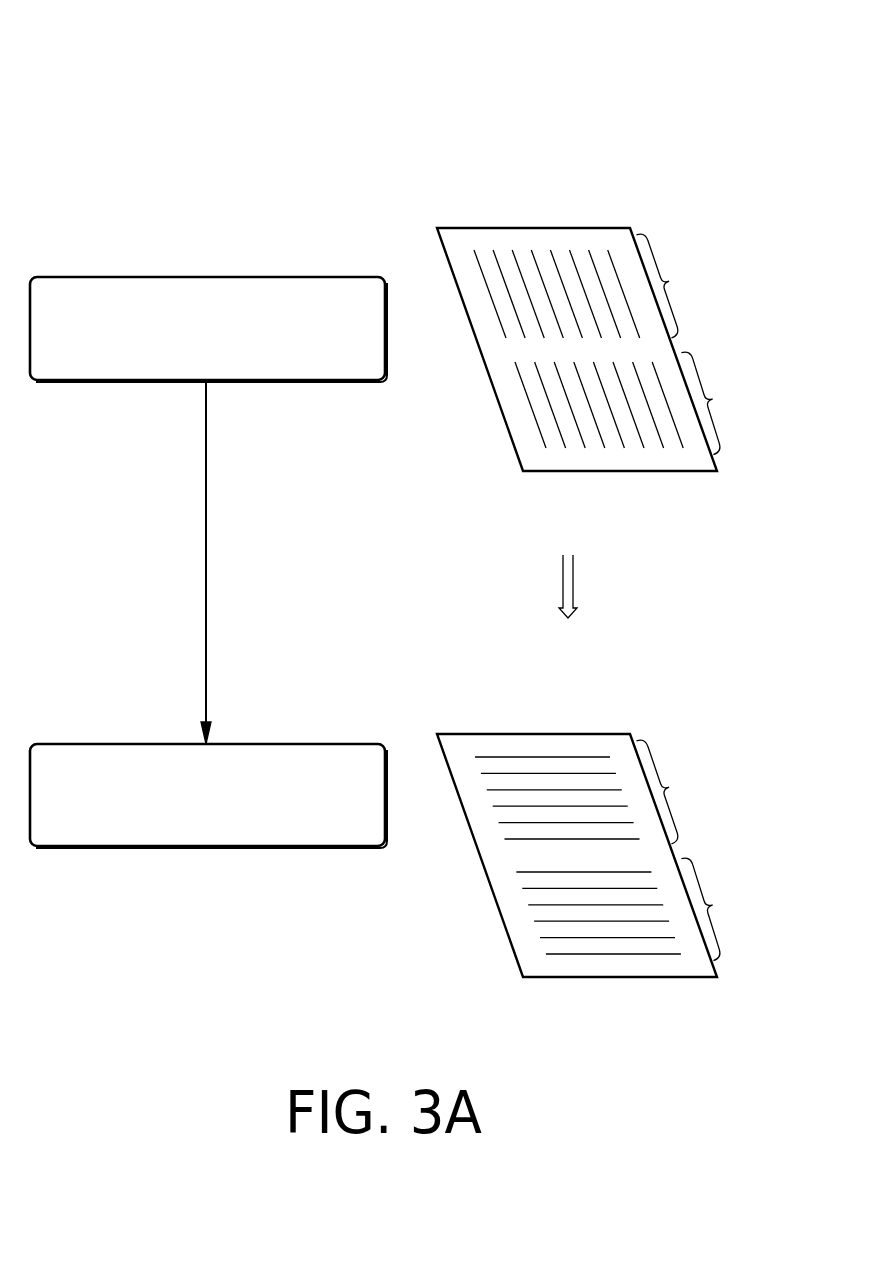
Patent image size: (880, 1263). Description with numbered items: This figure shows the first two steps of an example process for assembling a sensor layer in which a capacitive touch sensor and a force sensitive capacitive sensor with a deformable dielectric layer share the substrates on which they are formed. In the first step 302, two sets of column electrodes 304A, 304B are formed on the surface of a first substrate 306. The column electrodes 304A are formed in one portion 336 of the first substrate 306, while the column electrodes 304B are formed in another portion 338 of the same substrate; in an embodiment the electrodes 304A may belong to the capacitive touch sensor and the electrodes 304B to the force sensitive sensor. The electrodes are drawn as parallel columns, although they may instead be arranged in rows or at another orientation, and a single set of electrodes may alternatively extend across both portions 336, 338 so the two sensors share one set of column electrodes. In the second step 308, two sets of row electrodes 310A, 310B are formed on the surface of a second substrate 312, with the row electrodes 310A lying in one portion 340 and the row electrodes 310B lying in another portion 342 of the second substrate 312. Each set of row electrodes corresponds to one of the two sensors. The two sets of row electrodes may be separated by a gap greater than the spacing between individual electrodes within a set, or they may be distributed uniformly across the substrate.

The forming step for first substrate 302 is at (208, 329).
The forming step for second substrate 308 is at (208, 796).
The first substrate 306 is at (456, 219).
The column electrodes 304A is at (606, 239).
The column electrodes 304B is at (542, 463).
The portion of first substrate 336 is at (676, 286).
The portion of first substrate 338 is at (718, 403).
The second substrate 312 is at (472, 724).
The row electrodes 310A is at (611, 746).
The row electrodes 310B is at (542, 966).
The portion of second substrate 340 is at (675, 792).
The portion of second substrate 342 is at (716, 909).